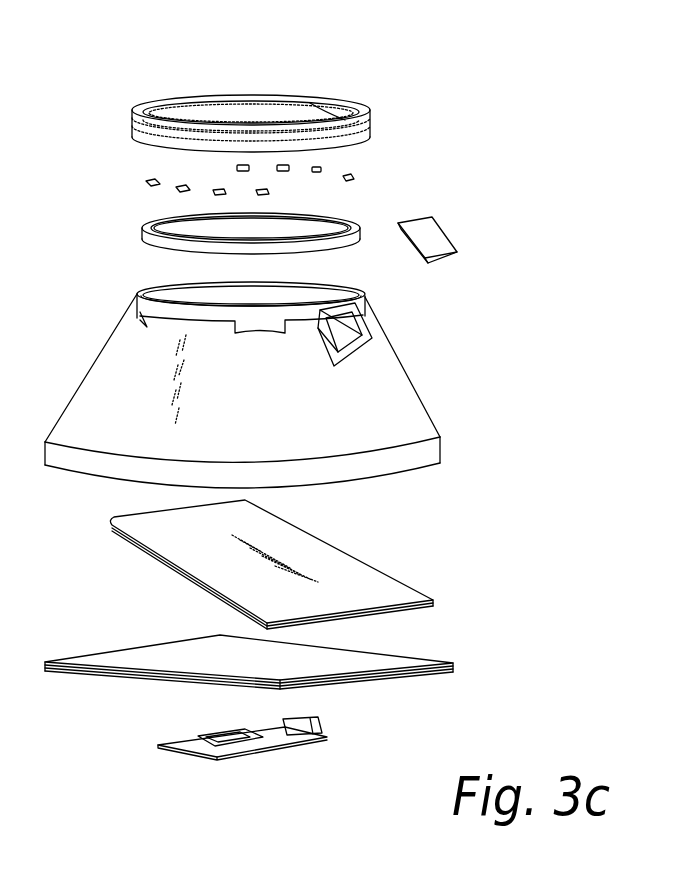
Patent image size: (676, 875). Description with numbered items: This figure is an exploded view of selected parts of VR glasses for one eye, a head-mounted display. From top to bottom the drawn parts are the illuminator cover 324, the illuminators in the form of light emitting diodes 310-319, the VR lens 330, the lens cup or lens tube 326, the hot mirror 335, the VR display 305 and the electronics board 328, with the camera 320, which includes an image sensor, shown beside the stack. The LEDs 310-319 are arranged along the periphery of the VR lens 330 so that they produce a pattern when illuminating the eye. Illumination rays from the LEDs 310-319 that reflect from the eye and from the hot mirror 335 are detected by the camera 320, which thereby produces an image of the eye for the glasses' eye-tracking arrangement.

The illuminator cover 324 is at (343, 112).
The light emitting diodes 310-319 is at (332, 174).
The camera 320 is at (433, 242).
The VR lens 330 is at (347, 243).
The lens cup 326 is at (413, 418).
The hot mirror 335 is at (372, 583).
The VR display 305 is at (407, 660).
The electronics board 328 is at (288, 743).